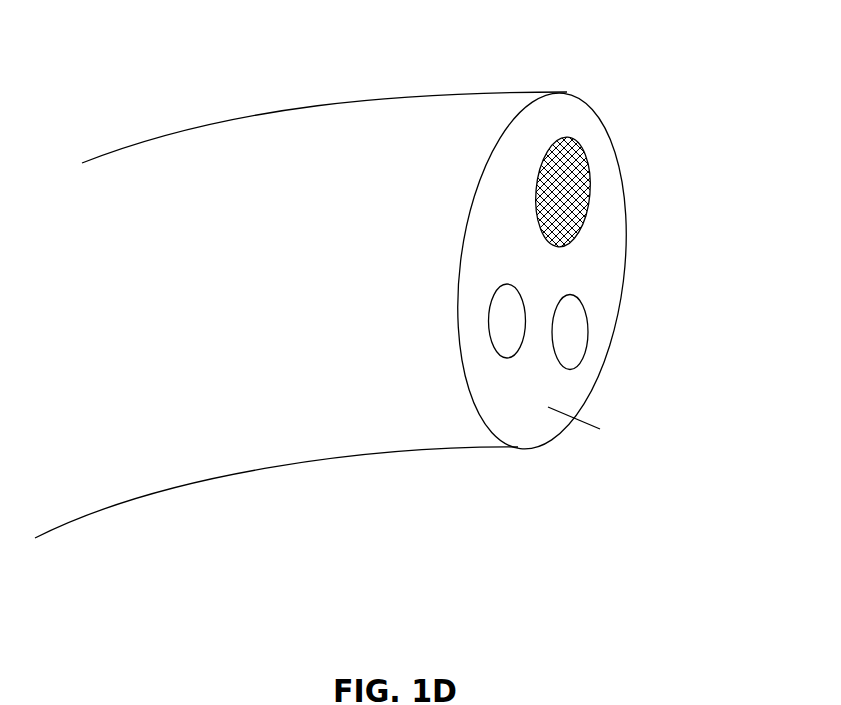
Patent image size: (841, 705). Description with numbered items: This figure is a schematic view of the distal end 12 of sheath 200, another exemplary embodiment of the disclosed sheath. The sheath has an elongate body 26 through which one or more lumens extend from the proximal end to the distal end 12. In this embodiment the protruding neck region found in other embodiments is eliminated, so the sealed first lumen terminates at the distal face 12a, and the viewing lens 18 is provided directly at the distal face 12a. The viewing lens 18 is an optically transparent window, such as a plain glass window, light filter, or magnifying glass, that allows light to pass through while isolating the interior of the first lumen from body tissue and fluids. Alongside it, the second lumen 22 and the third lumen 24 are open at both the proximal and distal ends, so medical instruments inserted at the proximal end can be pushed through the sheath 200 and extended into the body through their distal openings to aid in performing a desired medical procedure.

The sheath 200 is at (305, 118).
The distal end 12 is at (539, 80).
The distal face 12a is at (600, 429).
The viewing lens 18 is at (580, 178).
The second lumen 22 is at (513, 312).
The third lumen 24 is at (578, 333).
The elongate body 26 is at (308, 429).